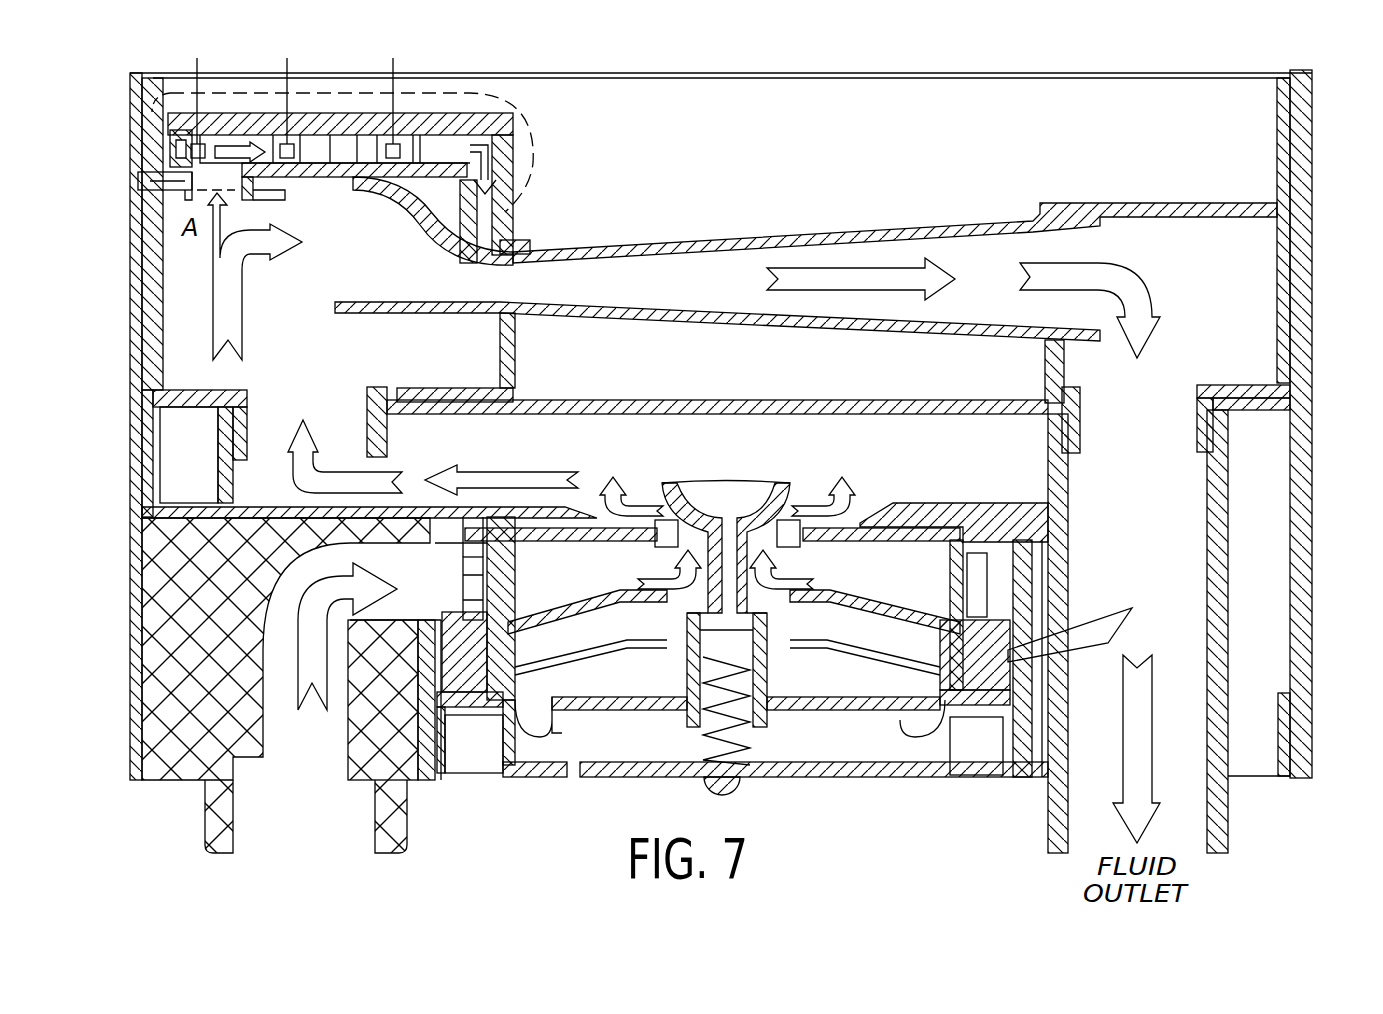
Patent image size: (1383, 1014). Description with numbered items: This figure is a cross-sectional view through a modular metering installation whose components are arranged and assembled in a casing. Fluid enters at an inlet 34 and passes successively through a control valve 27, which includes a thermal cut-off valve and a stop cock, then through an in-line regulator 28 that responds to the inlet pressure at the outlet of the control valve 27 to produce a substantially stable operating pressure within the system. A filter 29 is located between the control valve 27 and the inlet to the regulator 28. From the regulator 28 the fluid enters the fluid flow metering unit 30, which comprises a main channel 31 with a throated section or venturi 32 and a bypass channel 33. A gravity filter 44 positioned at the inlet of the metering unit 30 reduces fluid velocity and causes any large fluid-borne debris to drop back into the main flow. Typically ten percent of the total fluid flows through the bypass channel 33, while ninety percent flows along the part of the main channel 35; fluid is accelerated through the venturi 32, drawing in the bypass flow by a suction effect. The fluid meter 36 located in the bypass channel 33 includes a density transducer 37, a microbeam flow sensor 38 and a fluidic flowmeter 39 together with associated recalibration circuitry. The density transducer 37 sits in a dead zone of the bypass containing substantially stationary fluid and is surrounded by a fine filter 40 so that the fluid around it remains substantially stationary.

The control valve 27 is at (310, 730).
The in-line regulator 28 is at (790, 732).
The filter 29 is at (467, 577).
The fluid flow metering unit 30 is at (1336, 286).
The main channel 31 is at (943, 263).
The venturi 32 is at (515, 268).
The bypass channel 33 is at (138, 183).
The inlet 34 is at (300, 843).
The part of the main channel 35 is at (415, 255).
The fluid meter 36 is at (540, 128).
The density transducer 37 is at (188, 152).
The microbeam flow sensor 38 is at (290, 138).
The fluidic flowmeter 39 is at (427, 143).
The fine filter 40 is at (212, 140).
The gravity filter 44 is at (300, 390).